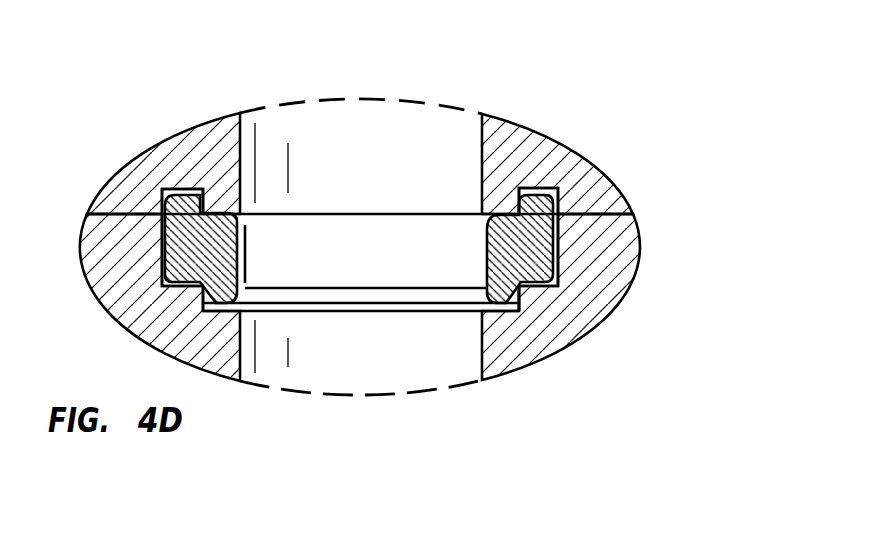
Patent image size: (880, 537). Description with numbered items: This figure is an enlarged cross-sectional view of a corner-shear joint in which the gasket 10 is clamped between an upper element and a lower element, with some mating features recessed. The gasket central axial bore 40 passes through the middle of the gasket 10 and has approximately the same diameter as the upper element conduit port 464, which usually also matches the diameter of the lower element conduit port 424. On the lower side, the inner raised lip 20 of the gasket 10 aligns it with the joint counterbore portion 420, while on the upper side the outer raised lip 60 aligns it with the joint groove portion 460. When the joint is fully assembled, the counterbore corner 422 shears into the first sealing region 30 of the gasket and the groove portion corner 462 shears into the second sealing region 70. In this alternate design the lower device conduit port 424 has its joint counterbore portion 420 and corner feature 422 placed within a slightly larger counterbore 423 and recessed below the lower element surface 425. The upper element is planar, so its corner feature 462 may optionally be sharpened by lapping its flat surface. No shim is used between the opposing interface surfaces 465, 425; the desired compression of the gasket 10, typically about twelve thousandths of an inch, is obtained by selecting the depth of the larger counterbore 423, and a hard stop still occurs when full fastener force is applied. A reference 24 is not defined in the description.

The gasket 10 is at (348, 268).
The inner raised lip 20 is at (502, 303).
The pipe end (adjacent figure) 24 is at (58, 0).
The first sealing region 30 is at (528, 275).
The central axial bore 40 is at (433, 260).
The outer raised lip 60 is at (537, 197).
The second sealing region 70 is at (517, 213).
The joint counterbore portion 420 is at (522, 288).
The counterbore corner 422 is at (527, 297).
The larger counterbore 423 is at (560, 272).
The lower element conduit port 424 is at (240, 350).
The lower element surface 425 is at (582, 218).
The joint groove portion 460 is at (554, 188).
The groove portion corner 462 is at (518, 213).
The upper element conduit port 464 is at (240, 152).
The interface surface 465 is at (593, 215).